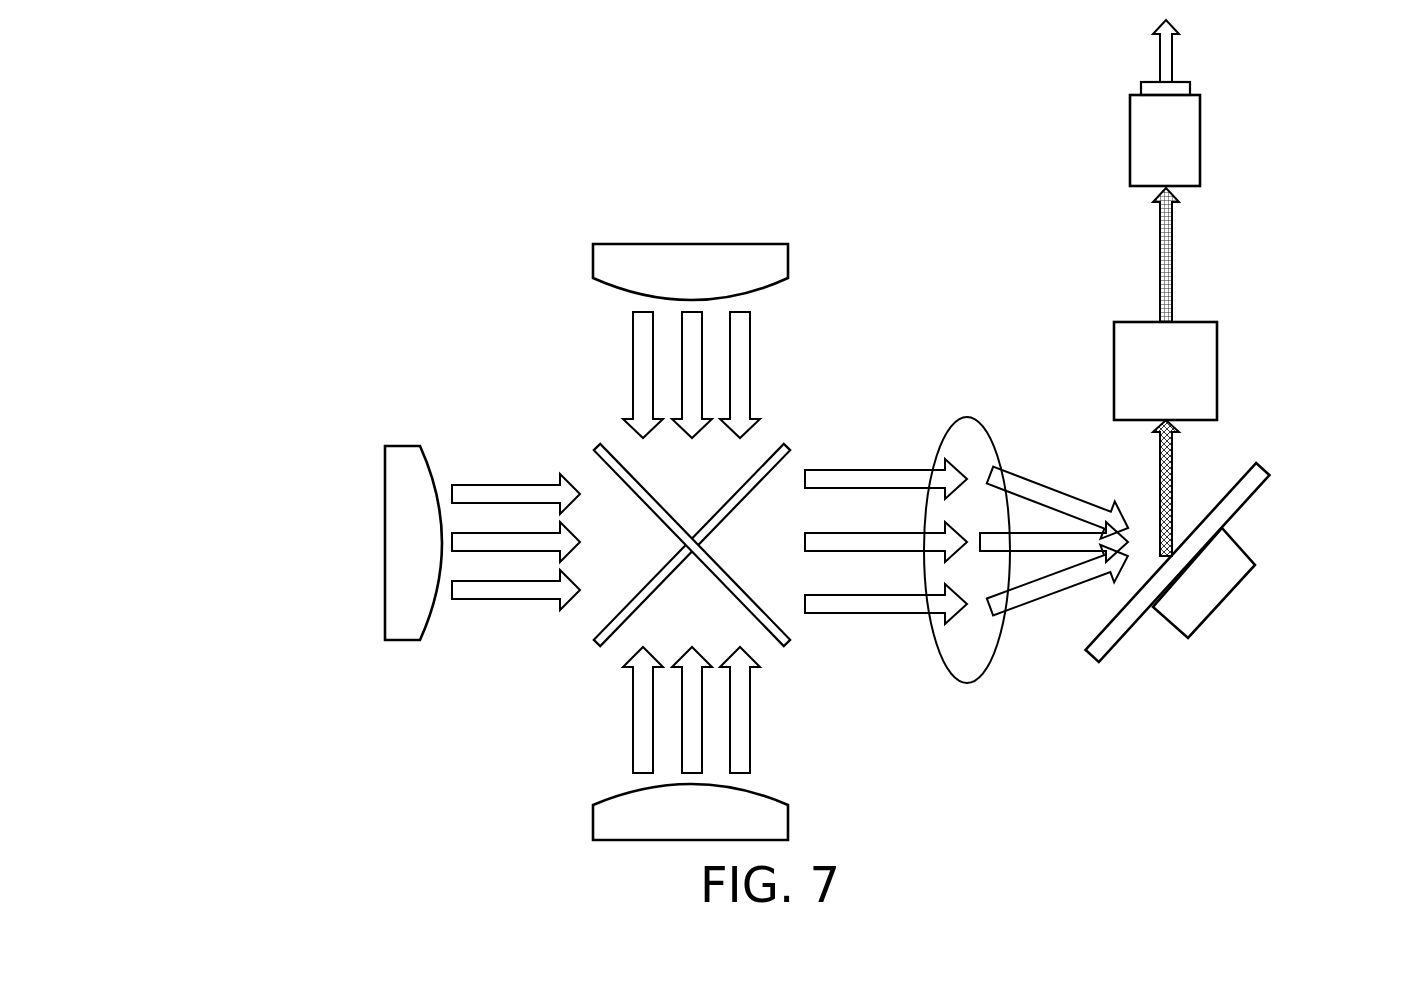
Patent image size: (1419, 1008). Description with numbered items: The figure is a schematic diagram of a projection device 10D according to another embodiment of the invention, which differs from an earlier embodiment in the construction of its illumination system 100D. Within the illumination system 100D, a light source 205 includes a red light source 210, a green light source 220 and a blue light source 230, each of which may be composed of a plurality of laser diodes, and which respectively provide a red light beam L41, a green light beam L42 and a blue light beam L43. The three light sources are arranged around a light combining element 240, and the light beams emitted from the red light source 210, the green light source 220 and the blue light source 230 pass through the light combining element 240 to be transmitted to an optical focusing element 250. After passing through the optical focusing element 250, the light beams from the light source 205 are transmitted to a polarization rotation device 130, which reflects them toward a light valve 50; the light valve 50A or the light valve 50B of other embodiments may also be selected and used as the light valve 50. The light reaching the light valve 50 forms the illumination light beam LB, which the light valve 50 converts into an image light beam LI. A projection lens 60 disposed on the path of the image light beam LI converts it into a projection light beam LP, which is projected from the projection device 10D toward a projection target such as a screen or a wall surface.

The projection device 10D is at (1324, 809).
The illumination system 100D is at (447, 264).
The light source 205 is at (196, 59).
The red light source 210 is at (683, 258).
The green light source 220 is at (389, 525).
The blue light source 230 is at (600, 825).
The light combining element 240 is at (597, 450).
The optical focusing element 250 is at (962, 672).
The polarization rotation device 130 is at (1218, 590).
The light valve 50 is at (1258, 371).
The light valve 50A is at (1258, 371).
The light valve 50B is at (1210, 388).
The projection lens 60 is at (1190, 158).
The red light beam L41 is at (742, 343).
The green light beam L42 is at (490, 592).
The blue light beam L43 is at (740, 720).
The illumination light beam LB is at (1173, 477).
The image light beam LI is at (1172, 272).
The projection light beam LP is at (1168, 55).